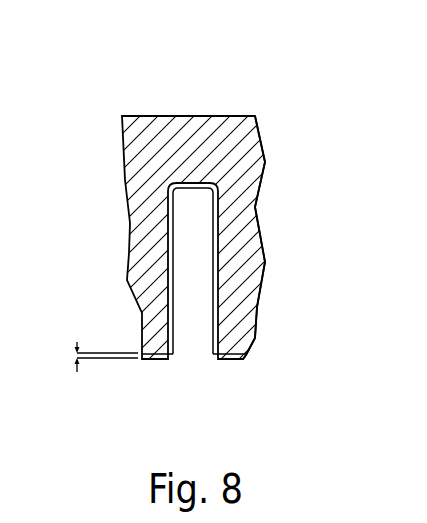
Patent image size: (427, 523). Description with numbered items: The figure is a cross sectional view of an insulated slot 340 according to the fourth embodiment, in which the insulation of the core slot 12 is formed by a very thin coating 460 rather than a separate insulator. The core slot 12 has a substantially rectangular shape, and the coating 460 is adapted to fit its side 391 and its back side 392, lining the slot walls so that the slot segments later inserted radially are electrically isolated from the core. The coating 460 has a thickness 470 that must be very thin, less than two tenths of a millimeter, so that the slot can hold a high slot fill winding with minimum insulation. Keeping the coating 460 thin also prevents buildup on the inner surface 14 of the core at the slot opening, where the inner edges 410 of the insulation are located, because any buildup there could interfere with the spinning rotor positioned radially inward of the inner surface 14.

The core slot 12 is at (192, 205).
The inner surface 14 is at (250, 343).
The insulated slot 340 is at (192, 99).
The side 391 is at (200, 181).
The back side 392 is at (247, 208).
The inner edges 410 is at (168, 362).
The coating 460 is at (217, 263).
The thickness 470 is at (77, 358).